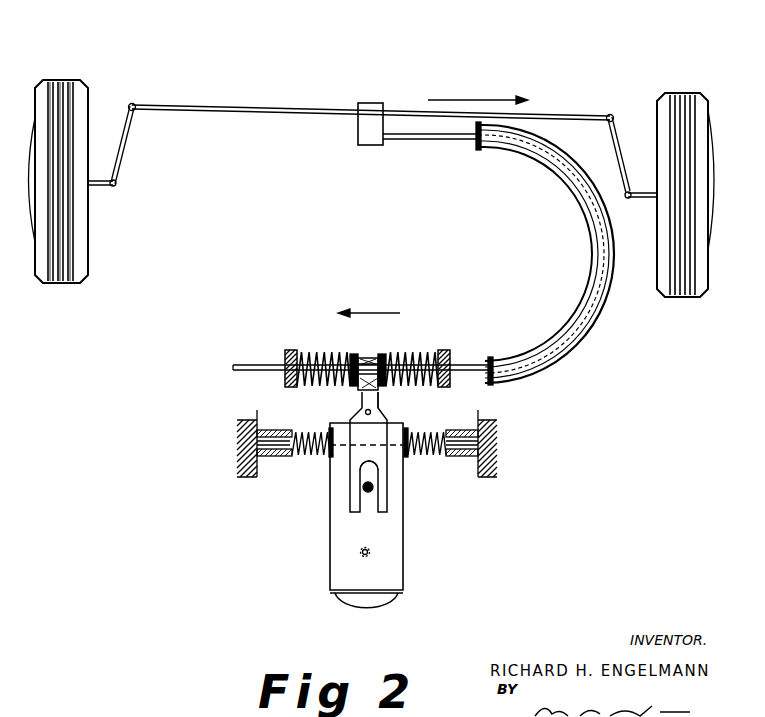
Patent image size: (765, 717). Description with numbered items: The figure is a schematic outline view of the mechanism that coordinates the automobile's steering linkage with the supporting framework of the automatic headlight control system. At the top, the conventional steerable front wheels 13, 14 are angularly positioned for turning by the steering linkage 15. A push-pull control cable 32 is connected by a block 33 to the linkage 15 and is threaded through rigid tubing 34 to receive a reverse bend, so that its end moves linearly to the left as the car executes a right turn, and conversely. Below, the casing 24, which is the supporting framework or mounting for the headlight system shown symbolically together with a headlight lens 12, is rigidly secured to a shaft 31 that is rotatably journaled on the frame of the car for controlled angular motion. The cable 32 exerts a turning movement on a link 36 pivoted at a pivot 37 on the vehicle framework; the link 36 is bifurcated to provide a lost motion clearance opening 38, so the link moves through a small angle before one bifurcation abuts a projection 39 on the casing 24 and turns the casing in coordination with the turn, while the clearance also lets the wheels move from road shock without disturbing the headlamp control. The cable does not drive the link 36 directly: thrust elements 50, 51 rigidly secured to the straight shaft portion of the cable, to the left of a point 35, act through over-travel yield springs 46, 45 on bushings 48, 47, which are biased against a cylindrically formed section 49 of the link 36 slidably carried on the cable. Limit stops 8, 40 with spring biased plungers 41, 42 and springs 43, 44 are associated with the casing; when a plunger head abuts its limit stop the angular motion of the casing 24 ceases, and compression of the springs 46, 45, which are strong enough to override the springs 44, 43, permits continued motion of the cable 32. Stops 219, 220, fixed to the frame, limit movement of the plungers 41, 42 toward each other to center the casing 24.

The limit stop 8 is at (275, 462).
The headlight lens 12 is at (384, 606).
The steerable front wheel 13 is at (60, 80).
The steerable front wheel 14 is at (680, 93).
The steering linkage 15 is at (305, 110).
The casing 24 is at (330, 568).
The shaft 31 is at (370, 549).
The push-pull control cable 32 is at (415, 139).
The block 33 is at (360, 126).
The rigid tubing 34 is at (605, 228).
The point 35 is at (478, 378).
The link 36 is at (350, 418).
The pivot 37 is at (376, 410).
The lost motion clearance opening 38 is at (360, 492).
The projection 39 is at (378, 486).
The limit stop 40 is at (460, 462).
The spring biased plunger 41 is at (325, 455).
The spring biased plunger 42 is at (408, 455).
The spring 43 is at (298, 430).
The spring 44 is at (428, 432).
The over-travel yield spring 45 is at (317, 350).
The over-travel yield spring 46 is at (421, 351).
The bushing 47 is at (356, 354).
The bushing 48 is at (392, 338).
The cylindrically formed section 49 is at (368, 356).
The thrust element 50 is at (445, 350).
The thrust element 51 is at (290, 350).
The stop 219 is at (330, 428).
The stop 220 is at (407, 428).